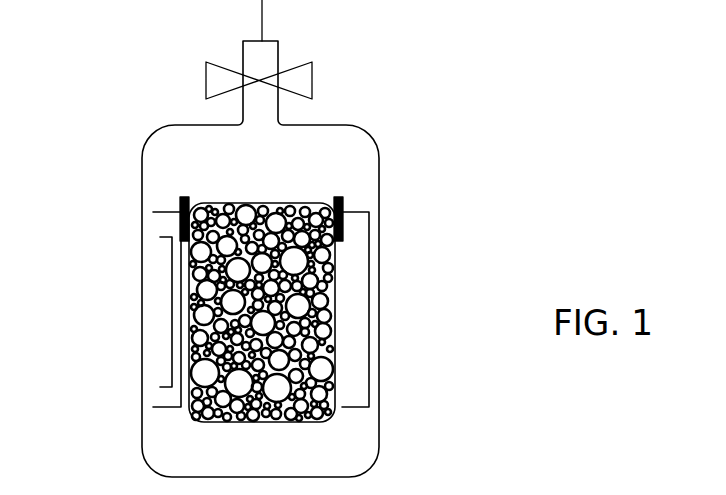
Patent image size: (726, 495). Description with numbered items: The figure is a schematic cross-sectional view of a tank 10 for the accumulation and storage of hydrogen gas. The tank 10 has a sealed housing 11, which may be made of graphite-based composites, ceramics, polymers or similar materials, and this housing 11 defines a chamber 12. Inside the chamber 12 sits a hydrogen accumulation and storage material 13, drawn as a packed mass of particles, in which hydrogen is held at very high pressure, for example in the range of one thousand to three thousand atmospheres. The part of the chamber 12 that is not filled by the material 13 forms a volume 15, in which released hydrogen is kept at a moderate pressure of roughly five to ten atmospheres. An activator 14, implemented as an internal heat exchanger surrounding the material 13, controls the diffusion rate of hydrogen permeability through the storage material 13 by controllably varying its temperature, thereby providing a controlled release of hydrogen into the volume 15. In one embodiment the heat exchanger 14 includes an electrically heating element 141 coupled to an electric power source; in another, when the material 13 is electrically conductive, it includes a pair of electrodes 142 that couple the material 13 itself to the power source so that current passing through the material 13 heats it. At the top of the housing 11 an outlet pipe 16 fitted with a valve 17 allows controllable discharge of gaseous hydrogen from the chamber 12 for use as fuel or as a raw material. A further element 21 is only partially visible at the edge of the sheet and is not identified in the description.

The tank 10 is at (458, 88).
The sealed housing 11 is at (380, 162).
The chamber 12 is at (352, 177).
The hydrogen accumulation and storage material 13 is at (213, 203).
The activator 14 is at (153, 310).
The electrically heating element 141 is at (165, 272).
The pair of electrodes 142 is at (180, 203).
The volume 15 is at (160, 159).
The outlet pipe 16 is at (273, 53).
The valve 17 is at (302, 87).
The element 21 (adjacent figure) 21 is at (620, 494).